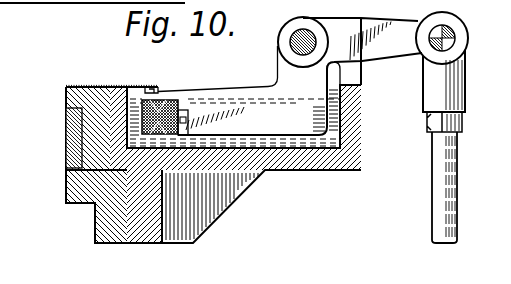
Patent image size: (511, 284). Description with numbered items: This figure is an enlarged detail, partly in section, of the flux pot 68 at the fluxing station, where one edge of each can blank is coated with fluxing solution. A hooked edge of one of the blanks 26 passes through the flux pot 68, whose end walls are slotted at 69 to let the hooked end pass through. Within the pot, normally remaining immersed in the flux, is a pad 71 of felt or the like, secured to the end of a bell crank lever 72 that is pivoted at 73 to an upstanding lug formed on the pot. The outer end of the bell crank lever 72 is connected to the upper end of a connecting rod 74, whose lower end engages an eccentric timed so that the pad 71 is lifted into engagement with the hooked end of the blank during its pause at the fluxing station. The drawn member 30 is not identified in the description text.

The blanks 26 is at (92, 87).
The inner member 30 is at (66, 139).
The flux pot 68 is at (239, 91).
The slot 69 is at (157, 89).
The pad 71 is at (176, 101).
The bell crank lever 72 is at (273, 133).
The pivot 73 is at (305, 30).
The connecting rod 74 is at (450, 184).